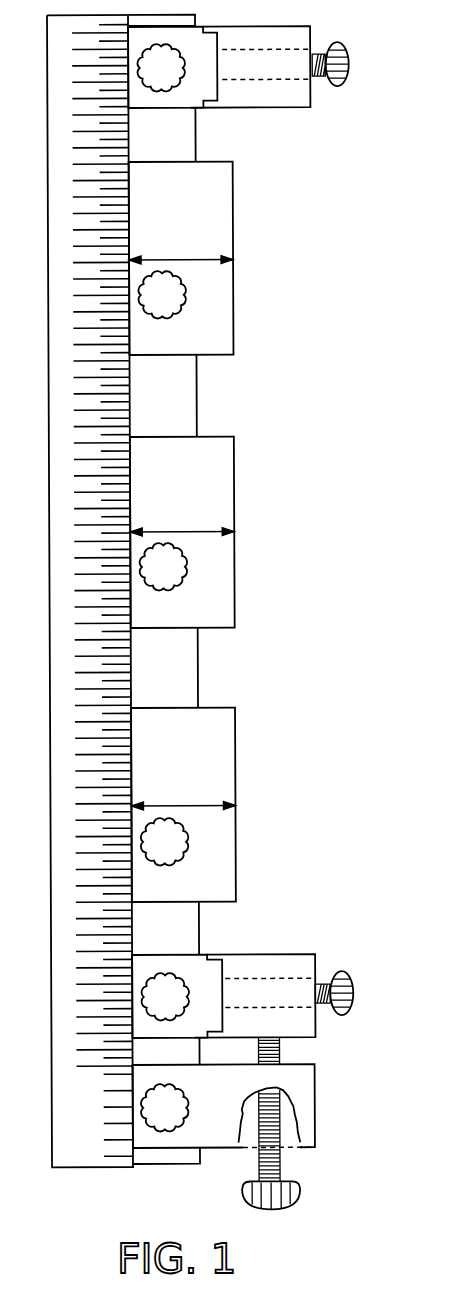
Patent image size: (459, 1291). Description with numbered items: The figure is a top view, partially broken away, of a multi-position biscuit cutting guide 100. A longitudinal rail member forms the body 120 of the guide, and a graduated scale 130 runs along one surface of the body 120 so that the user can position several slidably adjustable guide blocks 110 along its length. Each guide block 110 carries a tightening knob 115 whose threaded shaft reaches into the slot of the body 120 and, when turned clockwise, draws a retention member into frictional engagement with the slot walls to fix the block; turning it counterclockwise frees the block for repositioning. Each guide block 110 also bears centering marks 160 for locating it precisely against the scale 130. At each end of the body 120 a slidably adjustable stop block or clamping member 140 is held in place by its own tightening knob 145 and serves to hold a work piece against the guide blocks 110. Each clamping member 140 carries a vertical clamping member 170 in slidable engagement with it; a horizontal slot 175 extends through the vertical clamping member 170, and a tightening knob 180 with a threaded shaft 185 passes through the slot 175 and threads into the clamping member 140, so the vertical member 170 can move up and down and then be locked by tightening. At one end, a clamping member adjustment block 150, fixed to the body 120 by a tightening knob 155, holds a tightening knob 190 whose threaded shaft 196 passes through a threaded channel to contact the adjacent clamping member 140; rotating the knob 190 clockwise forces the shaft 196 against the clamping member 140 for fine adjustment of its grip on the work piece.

The multi-position biscuit cutting guide 100 is at (276, 523).
The slidably adjustable guide block 110 is at (233, 218).
The tightening knob 115 is at (188, 302).
The body 120 is at (197, 393).
The scale 130 is at (74, 1168).
The clamping member 140 is at (220, 90).
The tightening knob 145 is at (172, 88).
The clamping member adjustment block 150 is at (316, 1100).
The tightening knob 155 is at (157, 1133).
The centering marks 160 is at (188, 262).
The vertical clamping member 170 is at (292, 60).
The horizontal slot 175 is at (312, 85).
The tightening knob 180 is at (348, 70).
The threaded shaft 185 is at (316, 55).
The tightening knob 190 is at (297, 1198).
The threaded shaft 196 is at (283, 1164).